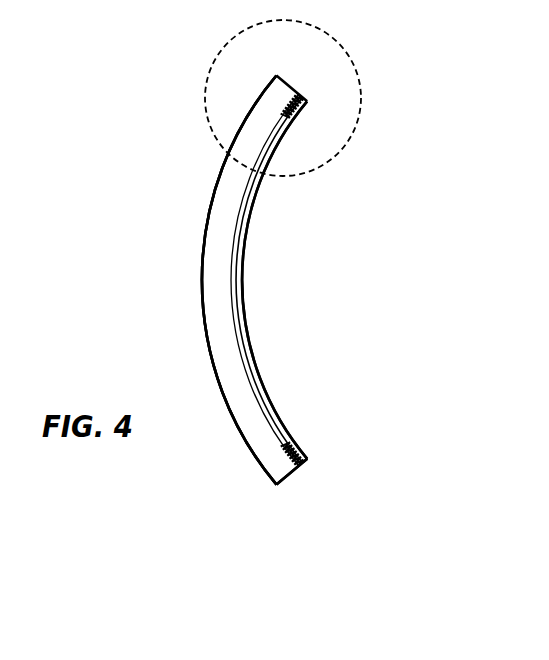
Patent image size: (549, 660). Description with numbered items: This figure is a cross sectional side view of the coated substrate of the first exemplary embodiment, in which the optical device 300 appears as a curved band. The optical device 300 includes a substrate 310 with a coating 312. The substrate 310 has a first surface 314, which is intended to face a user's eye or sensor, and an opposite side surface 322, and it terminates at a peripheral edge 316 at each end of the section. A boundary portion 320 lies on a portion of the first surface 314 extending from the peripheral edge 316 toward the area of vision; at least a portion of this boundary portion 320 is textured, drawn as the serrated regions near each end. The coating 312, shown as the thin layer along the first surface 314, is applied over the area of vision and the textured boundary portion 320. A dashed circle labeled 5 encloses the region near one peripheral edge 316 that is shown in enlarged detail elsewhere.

The optical device 300 is at (158, 102).
The substrate 310 is at (202, 263).
The coating 312 is at (242, 298).
The first surface 314 is at (254, 386).
The peripheral edge 316 is at (287, 476).
The boundary portion 320 is at (297, 113).
The side surface 322 is at (218, 185).
The detail region shown in FIG. 5 is at (342, 47).